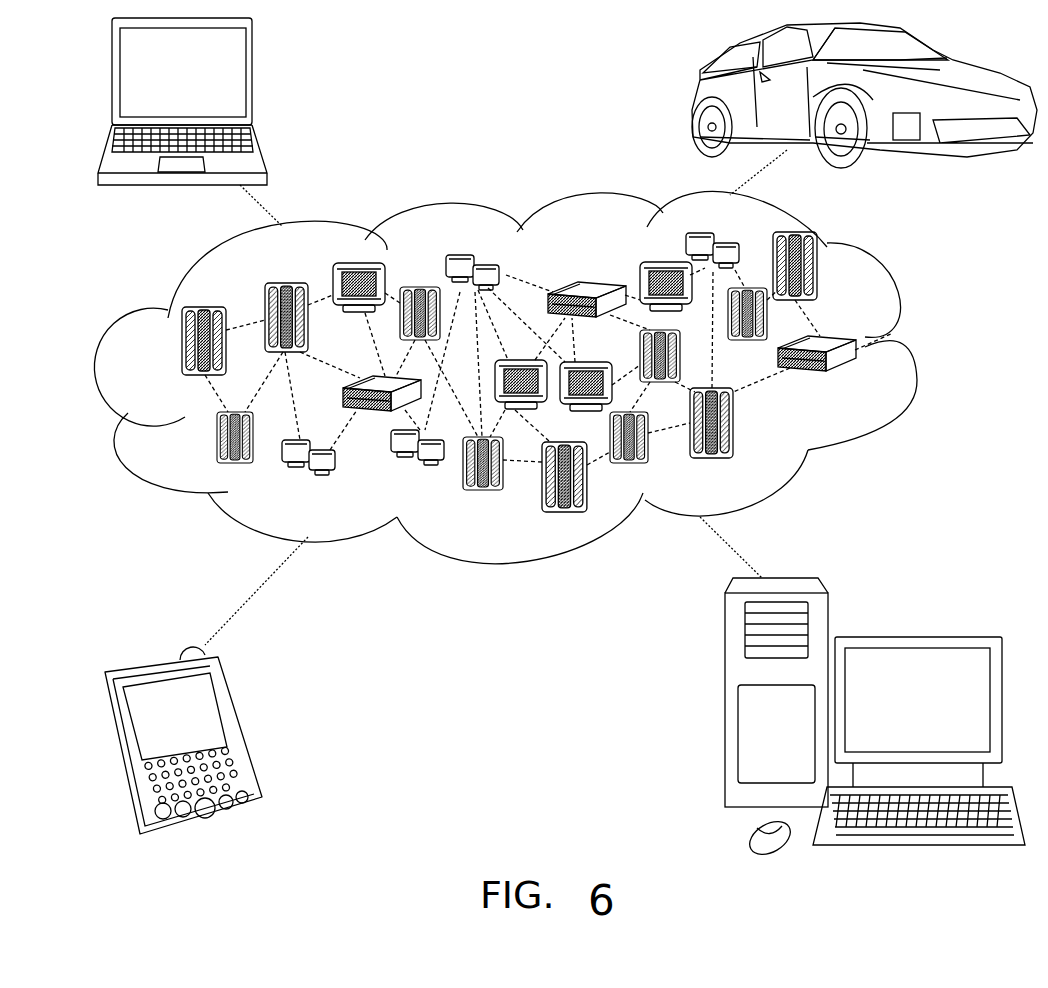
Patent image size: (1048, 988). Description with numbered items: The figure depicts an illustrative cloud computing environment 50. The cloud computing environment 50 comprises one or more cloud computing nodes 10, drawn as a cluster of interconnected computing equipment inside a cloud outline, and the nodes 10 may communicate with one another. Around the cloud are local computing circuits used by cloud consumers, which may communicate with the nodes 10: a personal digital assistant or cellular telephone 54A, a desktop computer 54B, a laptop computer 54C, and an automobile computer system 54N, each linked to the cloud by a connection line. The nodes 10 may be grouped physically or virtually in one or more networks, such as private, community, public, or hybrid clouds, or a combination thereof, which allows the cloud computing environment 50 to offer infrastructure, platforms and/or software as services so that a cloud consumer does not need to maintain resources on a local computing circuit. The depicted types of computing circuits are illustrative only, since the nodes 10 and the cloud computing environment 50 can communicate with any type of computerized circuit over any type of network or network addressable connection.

The cloud computing node 10 is at (855, 380).
The cloud computing environment 50 is at (915, 351).
The personal digital assistant or cellular telephone 54A is at (250, 727).
The desktop computer 54B is at (913, 632).
The laptop computer 54C is at (253, 83).
The automobile computer system 54N is at (697, 98).